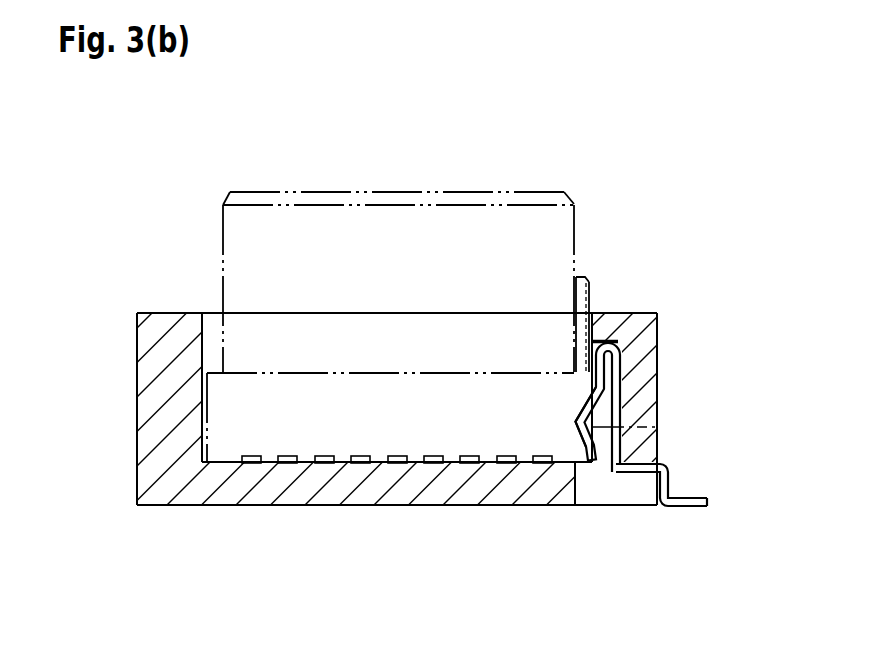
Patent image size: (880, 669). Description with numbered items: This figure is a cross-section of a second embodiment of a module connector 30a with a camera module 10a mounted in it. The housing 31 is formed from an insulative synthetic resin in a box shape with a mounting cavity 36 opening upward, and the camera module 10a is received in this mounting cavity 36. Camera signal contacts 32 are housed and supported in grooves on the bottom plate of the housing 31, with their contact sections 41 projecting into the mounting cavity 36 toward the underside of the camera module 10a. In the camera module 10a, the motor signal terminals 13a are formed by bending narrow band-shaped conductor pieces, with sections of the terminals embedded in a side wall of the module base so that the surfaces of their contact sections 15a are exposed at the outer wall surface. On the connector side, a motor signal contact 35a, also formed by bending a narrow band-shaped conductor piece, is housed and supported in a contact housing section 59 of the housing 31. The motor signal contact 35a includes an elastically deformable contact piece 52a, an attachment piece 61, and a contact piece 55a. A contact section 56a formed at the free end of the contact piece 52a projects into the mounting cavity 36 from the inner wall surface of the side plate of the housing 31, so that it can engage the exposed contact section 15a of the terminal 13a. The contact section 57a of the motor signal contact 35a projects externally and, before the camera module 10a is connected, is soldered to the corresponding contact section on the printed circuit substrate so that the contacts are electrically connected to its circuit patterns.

The camera module 10a is at (390, 285).
The motor signal terminal 13a is at (613, 267).
The contact section 15a is at (628, 387).
The module connector 30a is at (369, 234).
The housing 31 is at (197, 437).
The camera signal contact 32 is at (438, 437).
The motor signal contact 35a is at (636, 300).
The mounting cavity 36 is at (381, 344).
The contact section 41 is at (397, 429).
The contact piece 52a is at (566, 407).
The contact piece 55a is at (677, 467).
The contact section 56a is at (545, 421).
The contact section 57a is at (704, 530).
The contact housing section 59 is at (616, 512).
The attachment piece 61 is at (649, 336).